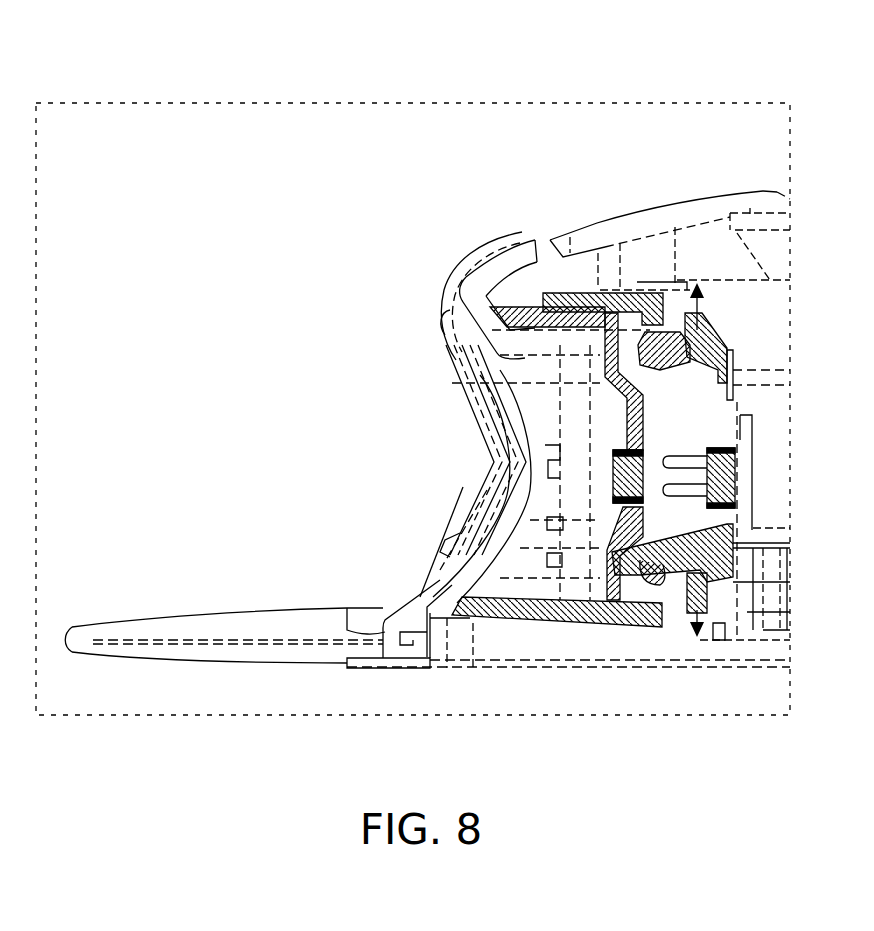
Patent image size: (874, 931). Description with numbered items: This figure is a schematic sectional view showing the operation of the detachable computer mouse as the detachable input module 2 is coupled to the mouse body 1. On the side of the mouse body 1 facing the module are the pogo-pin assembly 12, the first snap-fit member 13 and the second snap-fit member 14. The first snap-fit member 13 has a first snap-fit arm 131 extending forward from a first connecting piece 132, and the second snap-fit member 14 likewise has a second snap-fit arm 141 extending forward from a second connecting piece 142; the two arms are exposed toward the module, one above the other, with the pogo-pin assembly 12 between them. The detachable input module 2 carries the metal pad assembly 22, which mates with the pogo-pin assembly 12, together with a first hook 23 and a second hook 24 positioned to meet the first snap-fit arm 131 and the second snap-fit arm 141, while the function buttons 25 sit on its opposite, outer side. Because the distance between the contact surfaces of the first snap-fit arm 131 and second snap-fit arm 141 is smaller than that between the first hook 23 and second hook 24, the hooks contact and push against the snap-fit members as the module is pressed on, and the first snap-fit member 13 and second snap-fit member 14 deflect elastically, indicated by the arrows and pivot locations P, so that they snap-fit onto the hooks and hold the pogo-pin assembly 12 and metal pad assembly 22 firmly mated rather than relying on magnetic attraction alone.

The mouse body 1 is at (596, 220).
The detachable input module 2 is at (490, 243).
The pogo-pin assembly 12 is at (730, 488).
The first snap-fit member 13 is at (735, 68).
The first snap-fit arm 131 is at (655, 303).
The first connecting piece 132 is at (715, 300).
The second snap-fit member 14 is at (734, 752).
The second snap-fit arm 141 is at (652, 628).
The second connecting piece 142 is at (703, 628).
The metal pad assembly 22 is at (606, 485).
The first hook 23 is at (655, 365).
The second hook 24 is at (655, 553).
The function buttons 25 is at (455, 422).
The pivot point P is at (740, 357).